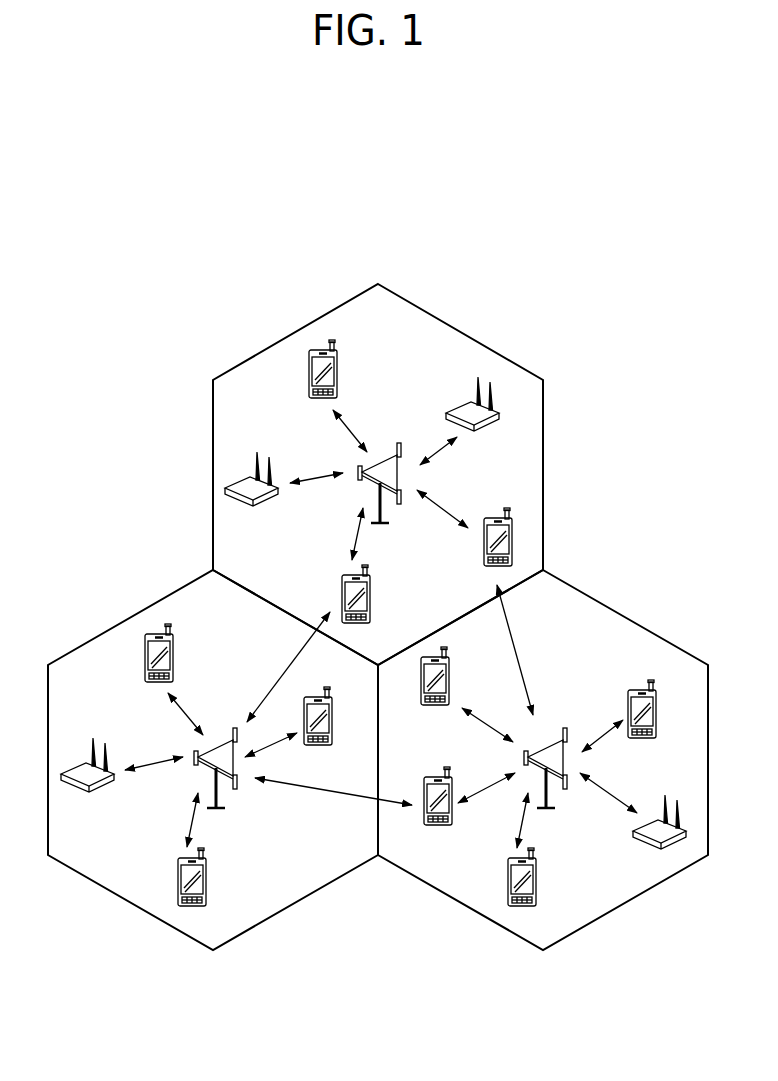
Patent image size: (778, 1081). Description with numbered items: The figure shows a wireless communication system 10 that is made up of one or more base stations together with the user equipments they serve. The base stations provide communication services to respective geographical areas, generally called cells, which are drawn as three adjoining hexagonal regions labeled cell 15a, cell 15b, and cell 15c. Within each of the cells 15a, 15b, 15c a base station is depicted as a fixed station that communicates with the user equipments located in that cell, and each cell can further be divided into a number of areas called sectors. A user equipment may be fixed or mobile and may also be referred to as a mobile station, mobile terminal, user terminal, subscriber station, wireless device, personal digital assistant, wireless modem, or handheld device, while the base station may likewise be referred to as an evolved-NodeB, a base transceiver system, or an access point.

The wireless communication system 10 is at (378, 617).
The cell 15a is at (544, 464).
The cell 15b is at (647, 628).
The cell 15c is at (110, 628).